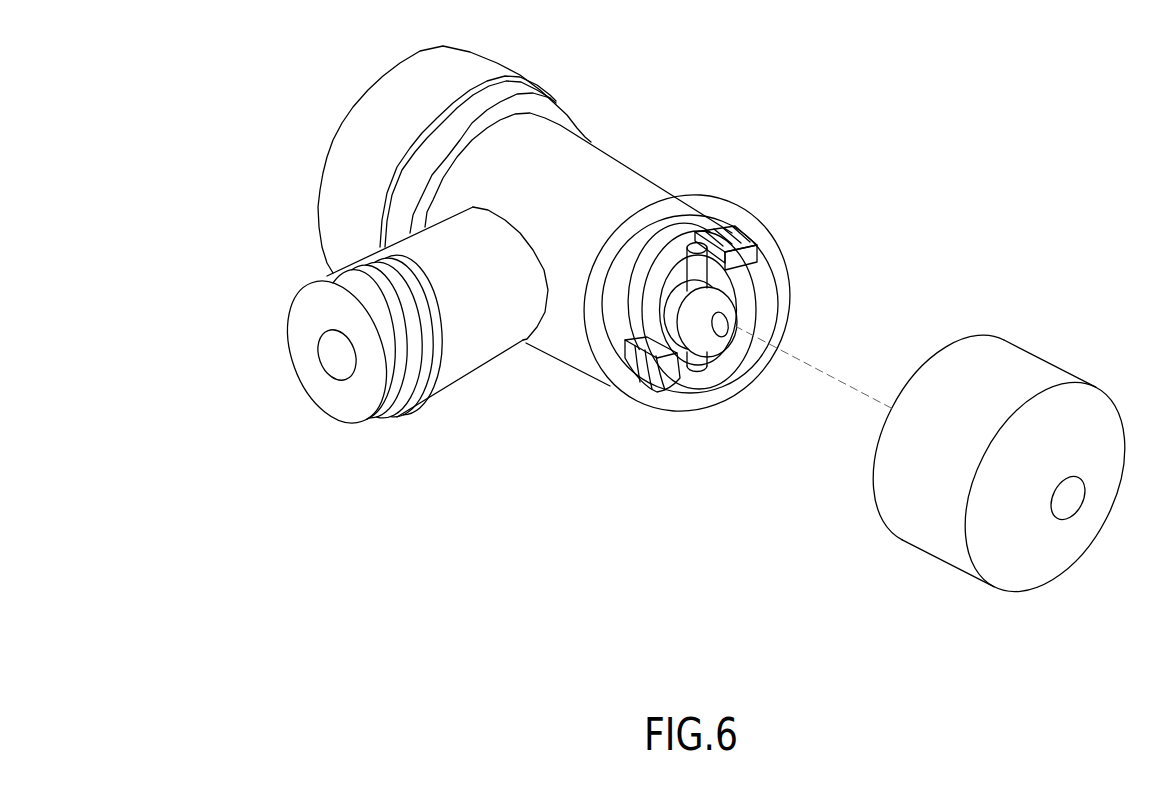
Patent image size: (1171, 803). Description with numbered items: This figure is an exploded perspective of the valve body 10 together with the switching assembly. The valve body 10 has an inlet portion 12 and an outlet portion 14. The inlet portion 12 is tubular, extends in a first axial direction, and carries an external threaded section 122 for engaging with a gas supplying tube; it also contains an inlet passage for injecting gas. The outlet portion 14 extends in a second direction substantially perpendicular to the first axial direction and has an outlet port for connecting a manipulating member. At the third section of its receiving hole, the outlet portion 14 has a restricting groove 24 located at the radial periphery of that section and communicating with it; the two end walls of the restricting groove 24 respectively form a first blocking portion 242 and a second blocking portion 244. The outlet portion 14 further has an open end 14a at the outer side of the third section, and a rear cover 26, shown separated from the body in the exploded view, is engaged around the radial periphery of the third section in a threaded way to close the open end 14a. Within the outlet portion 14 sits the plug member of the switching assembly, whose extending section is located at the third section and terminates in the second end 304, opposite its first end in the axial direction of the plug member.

The valve body 10 is at (680, 332).
The inlet portion 12 is at (408, 366).
The external threaded section 122 is at (408, 390).
The outlet portion 14 is at (525, 216).
The open end 14a is at (725, 303).
The restricting groove 24 is at (455, 365).
The first blocking portion 242 is at (761, 220).
The second blocking portion 244 is at (671, 421).
The rear cover 26 is at (1015, 414).
The second end 304 is at (767, 399).